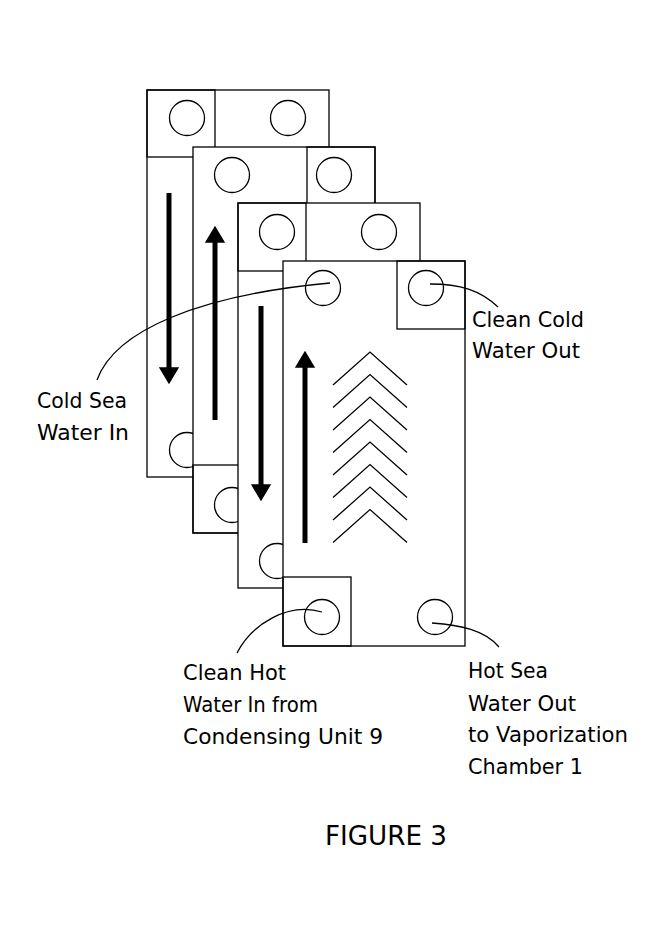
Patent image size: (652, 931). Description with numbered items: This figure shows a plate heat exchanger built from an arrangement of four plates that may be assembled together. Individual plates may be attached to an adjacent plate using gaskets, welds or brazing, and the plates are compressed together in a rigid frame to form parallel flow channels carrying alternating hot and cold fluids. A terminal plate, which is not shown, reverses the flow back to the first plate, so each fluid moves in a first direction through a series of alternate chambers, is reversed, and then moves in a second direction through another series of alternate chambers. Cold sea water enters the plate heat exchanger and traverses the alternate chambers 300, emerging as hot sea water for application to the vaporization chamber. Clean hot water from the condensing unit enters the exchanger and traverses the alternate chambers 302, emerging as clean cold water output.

The alternate chambers 300 is at (210, 452).
The alternate chambers 302 is at (155, 192).